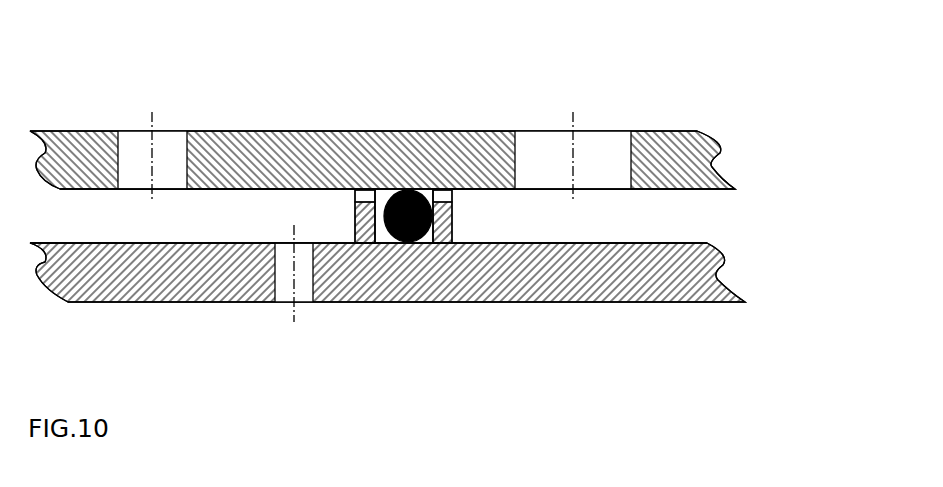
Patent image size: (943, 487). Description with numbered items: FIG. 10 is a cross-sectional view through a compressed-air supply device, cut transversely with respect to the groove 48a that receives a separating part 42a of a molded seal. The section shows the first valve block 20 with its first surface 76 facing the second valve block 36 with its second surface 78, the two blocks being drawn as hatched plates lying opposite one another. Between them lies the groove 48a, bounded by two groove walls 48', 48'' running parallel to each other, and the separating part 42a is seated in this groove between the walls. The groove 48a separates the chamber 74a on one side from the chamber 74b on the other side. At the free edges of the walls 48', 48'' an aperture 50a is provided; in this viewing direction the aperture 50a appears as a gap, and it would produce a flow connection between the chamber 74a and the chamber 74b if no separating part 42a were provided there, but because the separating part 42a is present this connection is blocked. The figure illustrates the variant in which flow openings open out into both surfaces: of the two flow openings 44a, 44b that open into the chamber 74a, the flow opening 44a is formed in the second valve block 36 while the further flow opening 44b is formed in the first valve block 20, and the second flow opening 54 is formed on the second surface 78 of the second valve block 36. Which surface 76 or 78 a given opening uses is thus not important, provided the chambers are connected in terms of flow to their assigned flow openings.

The second valve block 36 is at (698, 155).
The first valve block 20 is at (713, 270).
The second surface 78 is at (695, 193).
The first surface 76 is at (685, 238).
The flow opening 44a is at (168, 193).
The further flow opening 44b is at (280, 240).
The second flow opening 54 is at (588, 196).
The groove wall 48' is at (340, 216).
The groove wall 48'' is at (466, 216).
The aperture 50a is at (362, 195).
The groove 48a is at (382, 200).
The separating part 42a is at (388, 240).
The chamber 74a is at (242, 212).
The chamber 74b is at (477, 210).